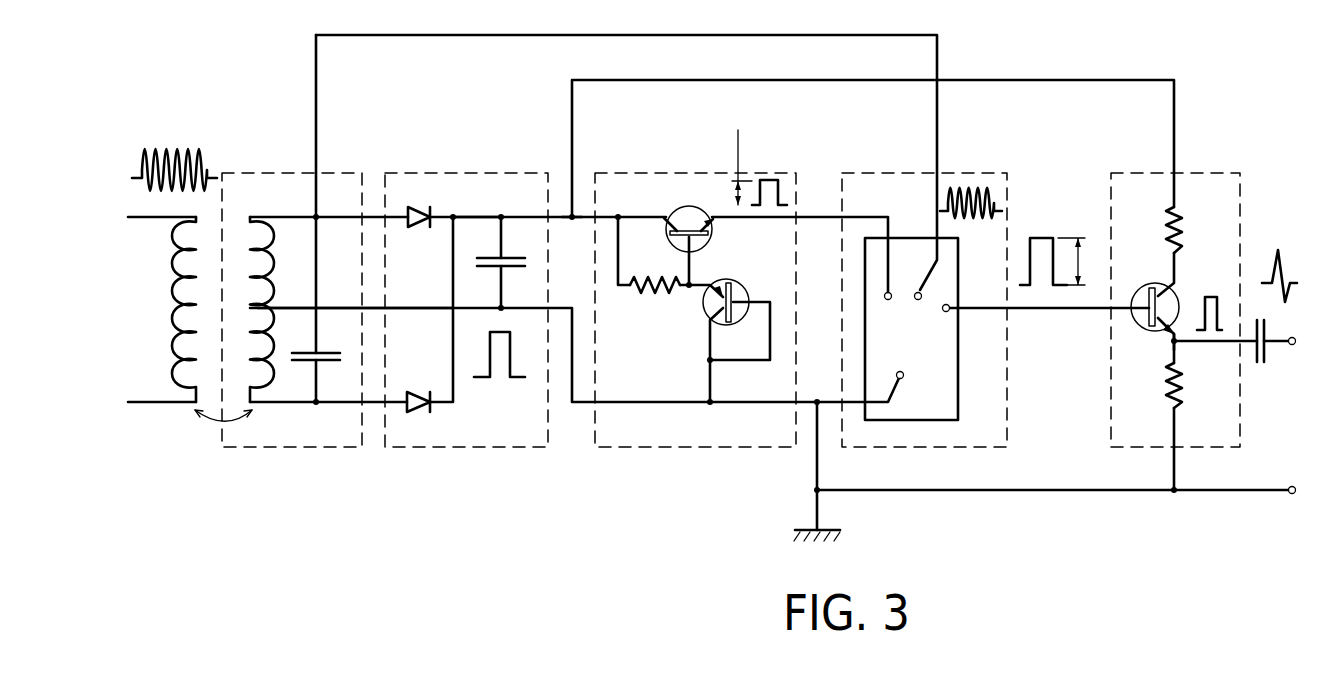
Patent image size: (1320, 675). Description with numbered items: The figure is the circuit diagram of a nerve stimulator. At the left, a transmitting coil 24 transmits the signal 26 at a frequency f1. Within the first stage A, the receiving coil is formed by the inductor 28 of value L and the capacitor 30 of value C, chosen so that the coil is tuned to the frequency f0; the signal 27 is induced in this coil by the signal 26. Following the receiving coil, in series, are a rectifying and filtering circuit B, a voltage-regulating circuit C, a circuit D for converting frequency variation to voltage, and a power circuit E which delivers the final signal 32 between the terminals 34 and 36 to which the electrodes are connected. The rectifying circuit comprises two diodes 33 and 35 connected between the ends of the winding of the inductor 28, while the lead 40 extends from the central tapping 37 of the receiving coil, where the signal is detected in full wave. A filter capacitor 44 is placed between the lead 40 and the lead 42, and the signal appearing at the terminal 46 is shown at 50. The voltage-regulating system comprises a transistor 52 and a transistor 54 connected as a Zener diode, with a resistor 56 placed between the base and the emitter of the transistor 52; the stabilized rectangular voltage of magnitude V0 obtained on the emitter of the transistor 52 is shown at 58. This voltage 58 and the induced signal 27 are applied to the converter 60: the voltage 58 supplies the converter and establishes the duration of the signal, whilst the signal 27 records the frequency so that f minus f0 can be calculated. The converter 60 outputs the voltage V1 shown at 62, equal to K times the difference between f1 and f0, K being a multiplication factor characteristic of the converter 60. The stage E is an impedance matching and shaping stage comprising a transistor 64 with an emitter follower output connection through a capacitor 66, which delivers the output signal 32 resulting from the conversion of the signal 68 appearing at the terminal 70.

The transmitting coil 24 is at (175, 385).
The transmitted signal 26 is at (207, 163).
The induced signal 27 is at (968, 196).
The inductor 28 is at (270, 370).
The capacitor 30 is at (303, 350).
The final signal 32 is at (1272, 253).
The diode 33 is at (420, 205).
The terminal 34 is at (1290, 348).
The diode 35 is at (415, 410).
The terminal 36 is at (1290, 495).
The central tapping 37 is at (265, 309).
The lead 40 is at (414, 313).
The lead 42 is at (487, 215).
The filter capacitor 44 is at (485, 265).
The terminal 46 is at (572, 222).
The rectified signal 50 is at (480, 378).
The transistor 52 is at (678, 207).
The transistor 54 is at (700, 305).
The resistor 56 is at (665, 290).
The stabilized rectangular voltage 58 is at (768, 180).
The converter 60 is at (907, 255).
The output voltage 62 is at (1042, 237).
The transistor 64 is at (1148, 290).
The capacitor 66 is at (1250, 350).
The signal 68 is at (1207, 292).
The terminal 70 is at (1170, 343).
The receiving coil stage A is at (263, 448).
The rectifying and filtering circuit B is at (390, 448).
The voltage-regulating circuit C is at (650, 448).
The frequency-variation to voltage converting circuit D is at (868, 448).
The power circuit E is at (1145, 448).